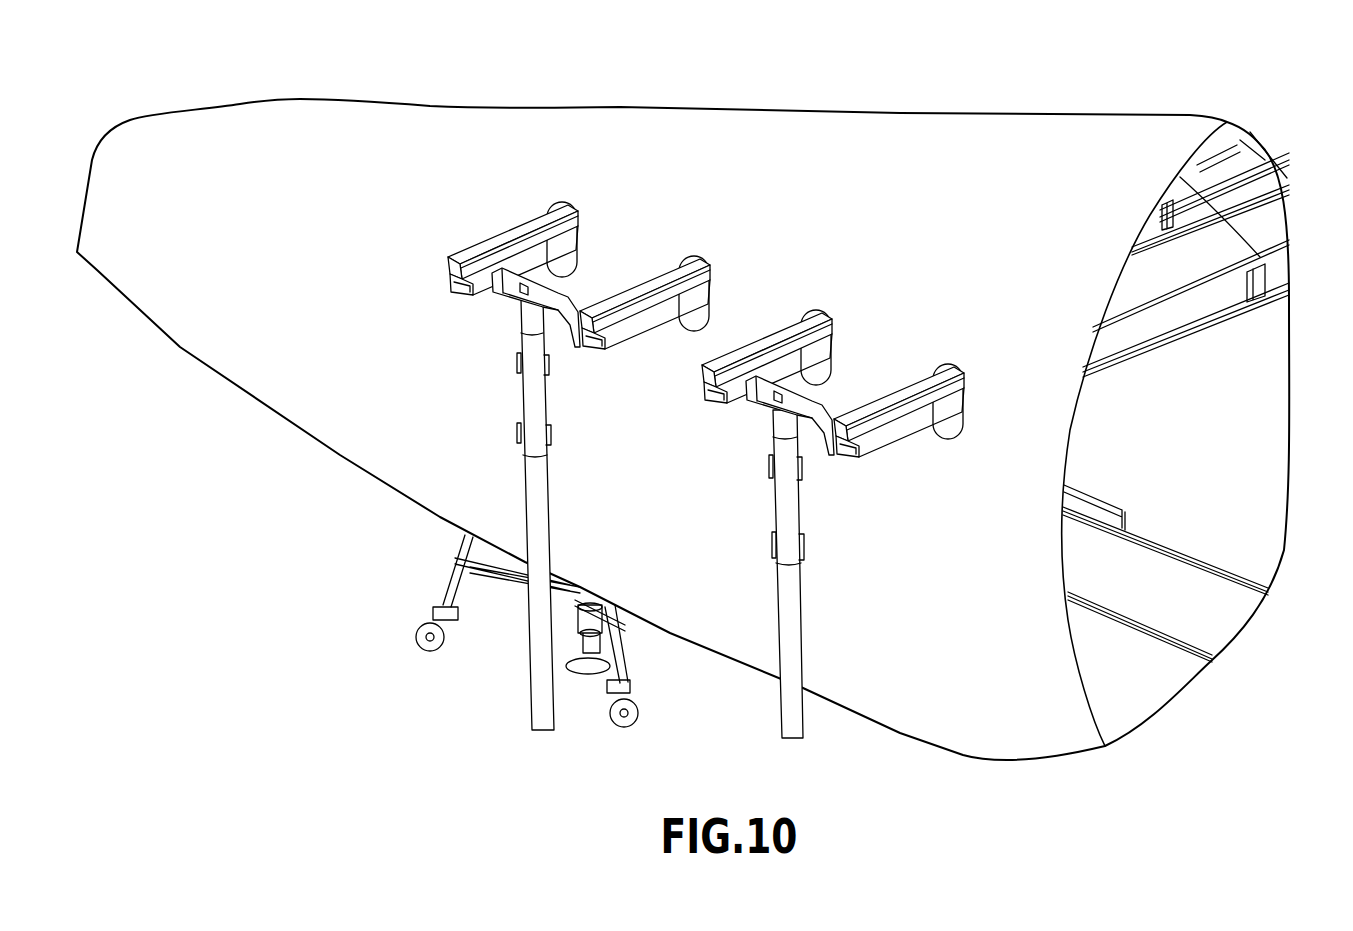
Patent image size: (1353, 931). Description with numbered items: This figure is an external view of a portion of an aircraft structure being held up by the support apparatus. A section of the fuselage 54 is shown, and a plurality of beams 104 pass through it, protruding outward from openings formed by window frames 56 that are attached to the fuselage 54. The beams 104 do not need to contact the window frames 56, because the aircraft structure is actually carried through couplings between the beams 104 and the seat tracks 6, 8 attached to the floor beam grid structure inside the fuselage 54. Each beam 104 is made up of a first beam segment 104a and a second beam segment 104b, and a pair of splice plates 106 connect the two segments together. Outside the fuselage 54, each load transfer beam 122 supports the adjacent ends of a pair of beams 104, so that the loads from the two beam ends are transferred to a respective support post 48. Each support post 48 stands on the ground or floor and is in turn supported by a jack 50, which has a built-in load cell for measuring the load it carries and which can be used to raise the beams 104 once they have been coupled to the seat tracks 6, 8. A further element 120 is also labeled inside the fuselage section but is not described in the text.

The fuselage 54 is at (449, 130).
The beam 104 is at (497, 245).
The window frame 56 is at (583, 228).
The load transfer beam 122 is at (513, 293).
The support post 48 is at (550, 505).
The jack 50 is at (442, 577).
The splice plate 106 is at (1257, 257).
The first beam segment 104a is at (1147, 323).
The second beam segment 104b is at (1257, 182).
The splice fitting 120 is at (1098, 495).
The seat track 6 is at (1173, 545).
The seat track 8 is at (1117, 610).